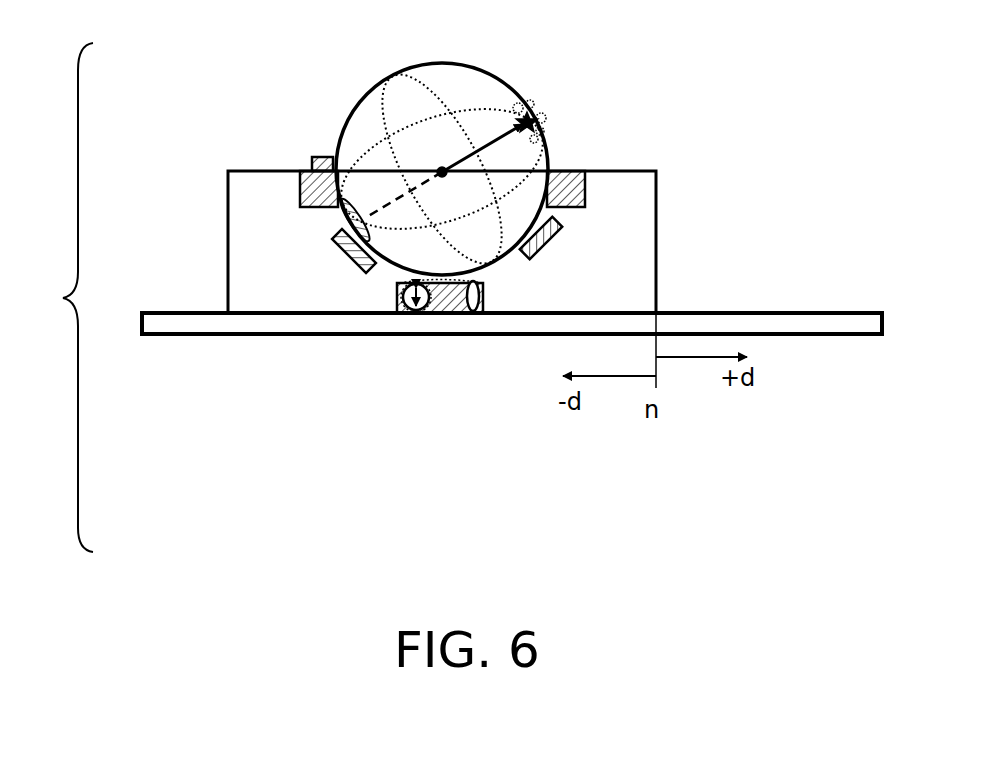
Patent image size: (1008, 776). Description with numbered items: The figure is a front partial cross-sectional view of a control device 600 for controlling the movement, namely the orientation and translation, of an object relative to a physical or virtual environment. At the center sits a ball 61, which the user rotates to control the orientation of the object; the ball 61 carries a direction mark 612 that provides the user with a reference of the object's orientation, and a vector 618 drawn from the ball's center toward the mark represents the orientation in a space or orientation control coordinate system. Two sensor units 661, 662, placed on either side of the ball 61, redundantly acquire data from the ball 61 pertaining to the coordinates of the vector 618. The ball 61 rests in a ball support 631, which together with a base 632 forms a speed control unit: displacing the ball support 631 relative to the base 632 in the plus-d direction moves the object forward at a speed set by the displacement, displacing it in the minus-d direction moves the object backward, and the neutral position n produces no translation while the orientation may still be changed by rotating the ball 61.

The control device 600 is at (50, 297).
The ball 61 is at (469, 74).
The direction mark 612 is at (534, 119).
The vector 618 is at (493, 141).
The ball support 631 is at (640, 291).
The base 632 is at (715, 316).
The sensor unit 661 is at (553, 231).
The sensor unit 662 is at (342, 252).